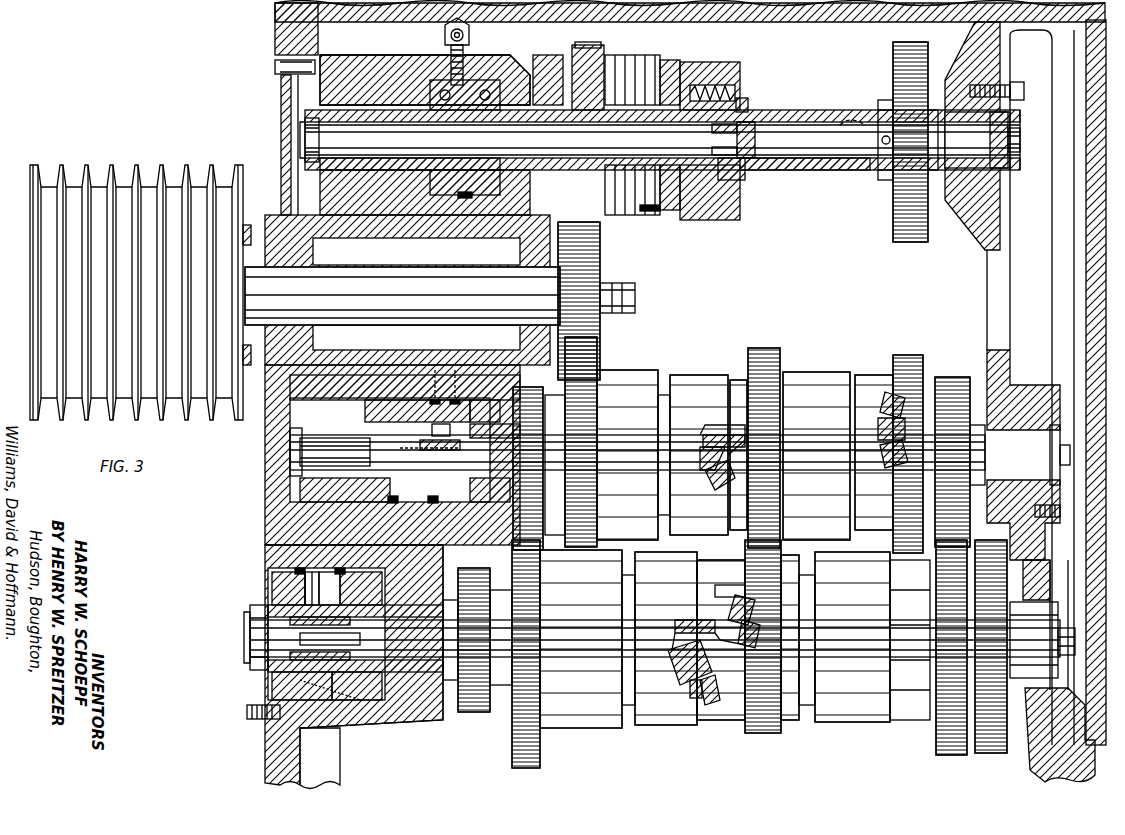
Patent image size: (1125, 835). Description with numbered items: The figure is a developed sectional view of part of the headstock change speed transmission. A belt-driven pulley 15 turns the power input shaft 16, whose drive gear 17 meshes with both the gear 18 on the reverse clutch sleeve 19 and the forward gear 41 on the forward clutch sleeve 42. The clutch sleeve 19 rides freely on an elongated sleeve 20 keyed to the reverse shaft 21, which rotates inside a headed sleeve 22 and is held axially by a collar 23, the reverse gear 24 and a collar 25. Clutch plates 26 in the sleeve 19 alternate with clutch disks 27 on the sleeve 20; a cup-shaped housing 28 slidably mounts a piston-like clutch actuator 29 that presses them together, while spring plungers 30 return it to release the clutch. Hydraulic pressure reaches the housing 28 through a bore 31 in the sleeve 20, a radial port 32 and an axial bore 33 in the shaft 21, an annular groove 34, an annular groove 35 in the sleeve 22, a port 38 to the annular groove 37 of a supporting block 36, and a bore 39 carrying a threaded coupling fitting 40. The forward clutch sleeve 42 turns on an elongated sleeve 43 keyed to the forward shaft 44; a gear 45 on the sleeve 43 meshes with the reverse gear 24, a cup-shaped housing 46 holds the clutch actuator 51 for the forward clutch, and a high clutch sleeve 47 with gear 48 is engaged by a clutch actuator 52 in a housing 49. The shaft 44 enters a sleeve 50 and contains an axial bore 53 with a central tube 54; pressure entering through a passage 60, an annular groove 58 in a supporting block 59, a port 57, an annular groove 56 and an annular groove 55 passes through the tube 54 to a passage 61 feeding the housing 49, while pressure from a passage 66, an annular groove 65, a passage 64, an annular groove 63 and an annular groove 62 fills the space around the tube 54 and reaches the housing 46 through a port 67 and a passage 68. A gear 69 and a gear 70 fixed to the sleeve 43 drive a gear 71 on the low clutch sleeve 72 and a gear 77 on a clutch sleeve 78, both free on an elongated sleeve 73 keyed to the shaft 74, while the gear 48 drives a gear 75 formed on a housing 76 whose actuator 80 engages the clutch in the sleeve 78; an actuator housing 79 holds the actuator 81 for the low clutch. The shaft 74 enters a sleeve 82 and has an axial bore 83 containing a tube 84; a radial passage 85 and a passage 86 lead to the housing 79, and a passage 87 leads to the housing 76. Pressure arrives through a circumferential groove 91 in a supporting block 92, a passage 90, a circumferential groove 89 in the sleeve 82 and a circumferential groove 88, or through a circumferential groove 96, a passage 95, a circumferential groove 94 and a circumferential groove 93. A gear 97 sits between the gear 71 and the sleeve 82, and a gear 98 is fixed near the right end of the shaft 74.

The pulley 15 is at (148, 172).
The power input shaft 16 is at (358, 268).
The drive gear 17 is at (602, 244).
The gear 18 is at (575, 45).
The clutch sleeve 19 is at (632, 58).
The elongated sleeve 20 is at (788, 110).
The reverse shaft 21 is at (790, 165).
The headed sleeve 22 is at (548, 108).
The collar 23 is at (318, 118).
The reverse gear 24 is at (893, 210).
The collar 25 is at (1008, 130).
The clutch plates 26 is at (672, 62).
The clutch disks 27 is at (658, 215).
The cup-shaped housing 28 is at (715, 65).
The clutch actuator 29 is at (736, 80).
The spring plungers 30 is at (745, 100).
The bore 31 is at (740, 172).
The radial port 32 is at (758, 128).
The axial bore 33 is at (712, 130).
The annular groove 34 is at (425, 165).
The annular groove 35 is at (445, 178).
The supporting block or bushing 36 is at (512, 80).
The annular groove 37 is at (458, 195).
The port 38 is at (430, 100).
The bore 39 is at (470, 50).
The threaded coupling fitting 40 is at (447, 45).
The forward gear 41 is at (595, 412).
The forward clutch sleeve 42 is at (622, 370).
The elongated sleeve 43 is at (737, 380).
The forward shaft 44 is at (502, 466).
The gear 45 is at (915, 352).
The cup-shaped housing 46 is at (700, 372).
The clutch sleeve 47 is at (826, 372).
The gear 48 is at (776, 348).
The housing 49 is at (878, 374).
The sleeve 50 is at (488, 502).
The clutch actuator 51 is at (710, 490).
The clutch actuator 52 is at (884, 395).
The axial bore 53 is at (884, 467).
The tube 54 is at (460, 437).
The annular groove 55 is at (365, 438).
The annular groove 56 is at (365, 494).
The port 57 is at (368, 408).
The annular groove 58 is at (393, 503).
The supporting block or bushing 59 is at (433, 503).
The passage 60 is at (375, 388).
The passage 61 is at (878, 428).
The annular groove 62 is at (442, 460).
The annular groove 63 is at (440, 430).
The passage 64 is at (455, 410).
The annular groove 65 is at (450, 372).
The passage 66 is at (436, 374).
The port 67 is at (704, 445).
The passage 68 is at (702, 468).
The gear 69 is at (520, 390).
The gear 70 is at (965, 378).
The gear 71 is at (512, 748).
The low clutch sleeve 72 is at (556, 728).
The elongated sleeve 73 is at (715, 722).
The shaft 74 is at (430, 637).
The gear 75 is at (768, 735).
The housing 76 is at (798, 722).
The gear 77 is at (950, 755).
The clutch sleeve 78 is at (855, 725).
The actuator housing 79 is at (650, 727).
The actuator 80 is at (738, 585).
The actuator 81 is at (690, 703).
The sleeve 82 is at (398, 605).
The axial bore 83 is at (262, 637).
The tube 84 is at (688, 620).
The radial passage 85 is at (668, 655).
The passage 86 is at (762, 628).
The passage 87 is at (735, 605).
The circumferential groove 88 is at (310, 675).
The circumferential groove 89 is at (312, 588).
The passage 90 is at (286, 588).
The circumferential groove 91 is at (302, 566).
The supporting block or bushing 92 is at (362, 572).
The circumferential groove 93 is at (350, 628).
The circumferential groove 94 is at (352, 682).
The passage 95 is at (345, 592).
The circumferential groove 96 is at (345, 566).
The gear 97 is at (478, 568).
The gear 98 is at (990, 753).